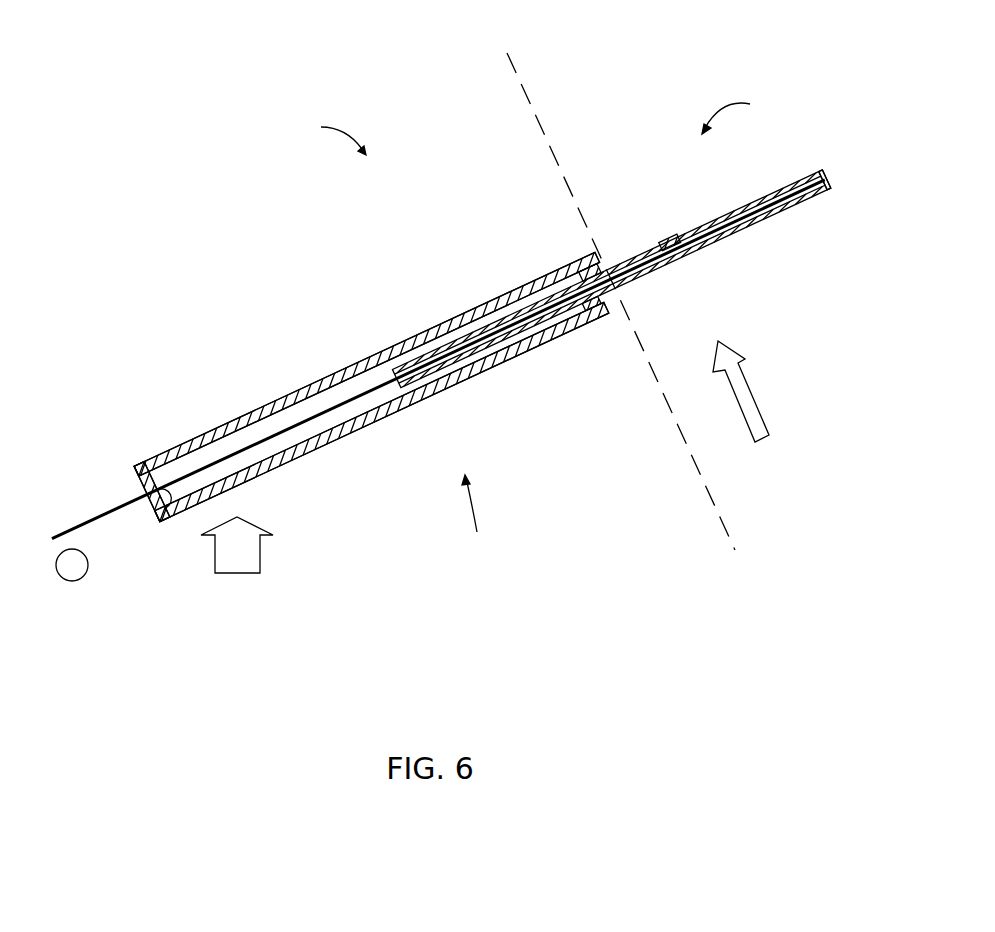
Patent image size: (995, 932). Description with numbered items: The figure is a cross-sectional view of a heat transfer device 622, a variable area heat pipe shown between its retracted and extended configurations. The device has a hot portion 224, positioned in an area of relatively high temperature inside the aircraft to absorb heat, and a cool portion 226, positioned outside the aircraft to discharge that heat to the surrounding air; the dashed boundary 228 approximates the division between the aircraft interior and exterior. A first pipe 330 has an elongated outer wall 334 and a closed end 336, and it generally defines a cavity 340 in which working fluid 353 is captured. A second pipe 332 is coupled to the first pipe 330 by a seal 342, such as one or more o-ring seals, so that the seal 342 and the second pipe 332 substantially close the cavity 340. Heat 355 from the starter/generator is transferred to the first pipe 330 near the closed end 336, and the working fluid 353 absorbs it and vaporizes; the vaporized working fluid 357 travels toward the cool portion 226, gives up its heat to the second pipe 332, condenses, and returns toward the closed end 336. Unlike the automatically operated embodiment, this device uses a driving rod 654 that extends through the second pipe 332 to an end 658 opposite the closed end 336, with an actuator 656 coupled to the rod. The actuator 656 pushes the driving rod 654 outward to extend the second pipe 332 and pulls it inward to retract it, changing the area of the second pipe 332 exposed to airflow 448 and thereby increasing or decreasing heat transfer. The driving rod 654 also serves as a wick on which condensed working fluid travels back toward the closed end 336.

The hot portion 224 is at (477, 516).
The cool portion 226 is at (744, 114).
The boundary 228 is at (517, 75).
The first pipe 330 is at (340, 372).
The second pipe 332 is at (748, 229).
The elongated outer wall 334 is at (204, 435).
The closed end 336 is at (152, 495).
The cavity 340 is at (285, 448).
The seal 342 is at (603, 318).
The working fluid 353 is at (175, 500).
The heat 355 is at (249, 556).
The vaporized working fluid 357 is at (674, 240).
The airflow 448 is at (740, 406).
The heat transfer device 622 is at (324, 135).
The driving rod 654 is at (362, 396).
The actuator 656 is at (68, 582).
The end 658 is at (826, 173).